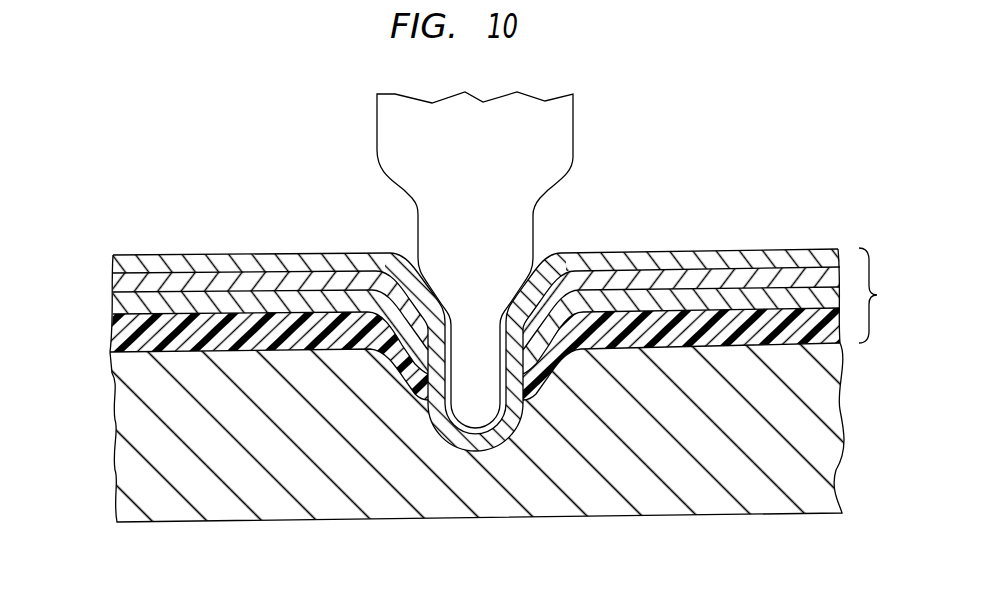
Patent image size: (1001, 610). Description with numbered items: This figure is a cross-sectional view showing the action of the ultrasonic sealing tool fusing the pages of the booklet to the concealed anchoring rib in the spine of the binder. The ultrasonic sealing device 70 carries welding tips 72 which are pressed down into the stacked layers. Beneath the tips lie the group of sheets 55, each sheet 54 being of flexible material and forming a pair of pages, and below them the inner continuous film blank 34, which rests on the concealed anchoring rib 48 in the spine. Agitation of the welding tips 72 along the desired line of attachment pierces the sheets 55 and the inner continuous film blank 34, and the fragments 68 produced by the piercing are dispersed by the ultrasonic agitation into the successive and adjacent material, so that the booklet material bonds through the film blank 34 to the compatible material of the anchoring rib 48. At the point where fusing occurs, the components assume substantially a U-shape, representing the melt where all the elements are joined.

The inner continuous film blank 34 is at (118, 330).
The concealed anchoring rib 48 is at (130, 464).
The sheet 54 is at (118, 267).
The group of sheets 55 is at (880, 295).
The fragments 68 is at (491, 440).
The ultrasonic sealing device 70 is at (400, 140).
The welding tips 72 is at (468, 413).